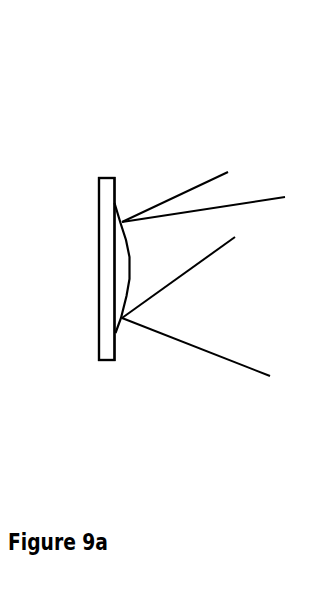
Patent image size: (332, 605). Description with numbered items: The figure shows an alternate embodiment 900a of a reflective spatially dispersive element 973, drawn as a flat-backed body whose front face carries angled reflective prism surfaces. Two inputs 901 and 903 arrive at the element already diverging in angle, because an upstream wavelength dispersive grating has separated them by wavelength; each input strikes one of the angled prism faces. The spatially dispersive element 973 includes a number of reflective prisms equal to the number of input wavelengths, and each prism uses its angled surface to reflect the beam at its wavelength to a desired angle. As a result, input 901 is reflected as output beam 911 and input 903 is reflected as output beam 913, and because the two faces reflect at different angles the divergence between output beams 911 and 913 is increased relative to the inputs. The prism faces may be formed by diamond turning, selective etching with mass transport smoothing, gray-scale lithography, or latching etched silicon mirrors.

The optical system 900a is at (128, 100).
The spatially dispersive element 973 is at (101, 365).
The input 901 is at (218, 170).
The output beam 911 is at (277, 194).
The input 903 is at (225, 250).
The output beam 913 is at (253, 368).